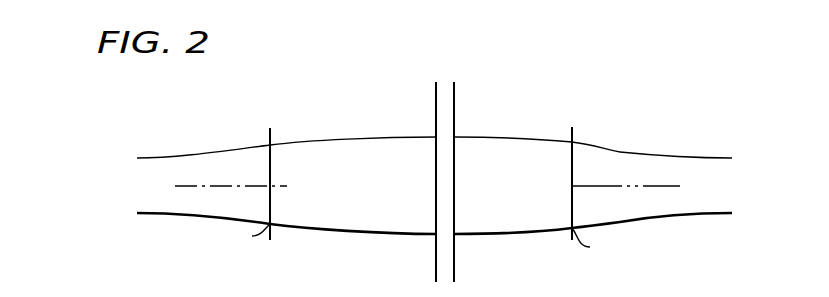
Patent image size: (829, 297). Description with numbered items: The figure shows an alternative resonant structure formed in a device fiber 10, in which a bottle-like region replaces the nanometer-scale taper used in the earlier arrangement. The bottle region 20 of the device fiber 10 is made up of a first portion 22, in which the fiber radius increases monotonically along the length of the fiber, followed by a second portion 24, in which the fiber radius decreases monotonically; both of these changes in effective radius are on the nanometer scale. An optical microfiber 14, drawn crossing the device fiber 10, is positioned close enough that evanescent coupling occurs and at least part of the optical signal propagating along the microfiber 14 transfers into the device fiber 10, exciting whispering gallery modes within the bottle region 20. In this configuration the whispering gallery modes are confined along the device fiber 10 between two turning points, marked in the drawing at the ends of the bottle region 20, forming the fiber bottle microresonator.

The device fiber 10 is at (140, 141).
The optical microfiber 14 is at (457, 107).
The bottle region 20 is at (549, 91).
The first portion 22 is at (347, 136).
The second portion 24 is at (515, 136).